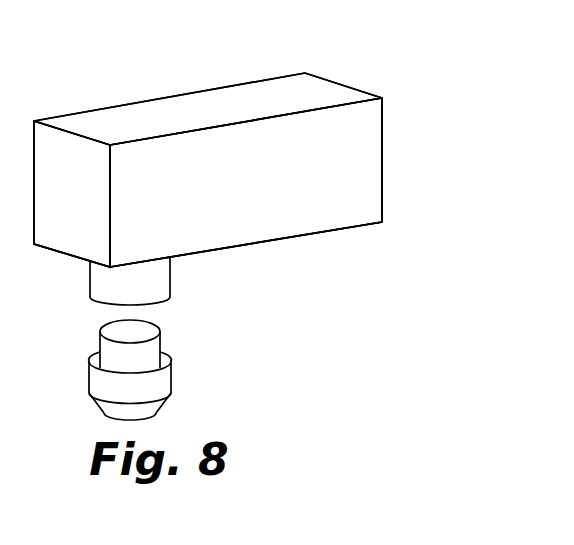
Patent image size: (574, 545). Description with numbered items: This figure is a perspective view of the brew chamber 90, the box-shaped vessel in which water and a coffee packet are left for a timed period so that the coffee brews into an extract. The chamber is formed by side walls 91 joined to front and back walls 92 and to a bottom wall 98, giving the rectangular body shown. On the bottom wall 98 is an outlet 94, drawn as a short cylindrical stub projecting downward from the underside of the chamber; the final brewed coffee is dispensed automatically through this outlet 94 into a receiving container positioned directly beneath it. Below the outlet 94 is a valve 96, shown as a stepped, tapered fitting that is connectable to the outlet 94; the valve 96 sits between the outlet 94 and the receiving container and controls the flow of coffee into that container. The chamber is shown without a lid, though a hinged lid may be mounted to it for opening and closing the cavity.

The brew chamber 90 is at (360, 141).
The side walls 91 is at (69, 223).
The front and back walls 92 is at (243, 82).
The outlet 94 is at (107, 282).
The valve 96 is at (162, 381).
The bottom wall 98 is at (302, 237).